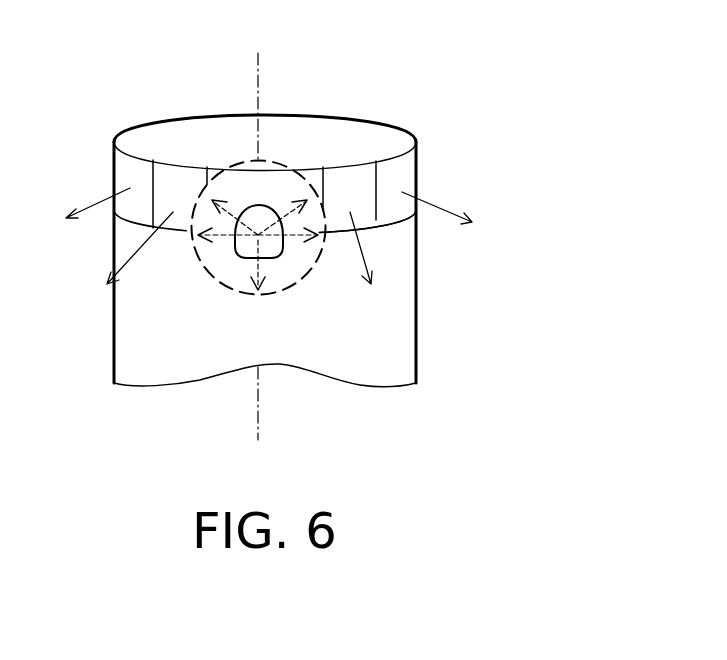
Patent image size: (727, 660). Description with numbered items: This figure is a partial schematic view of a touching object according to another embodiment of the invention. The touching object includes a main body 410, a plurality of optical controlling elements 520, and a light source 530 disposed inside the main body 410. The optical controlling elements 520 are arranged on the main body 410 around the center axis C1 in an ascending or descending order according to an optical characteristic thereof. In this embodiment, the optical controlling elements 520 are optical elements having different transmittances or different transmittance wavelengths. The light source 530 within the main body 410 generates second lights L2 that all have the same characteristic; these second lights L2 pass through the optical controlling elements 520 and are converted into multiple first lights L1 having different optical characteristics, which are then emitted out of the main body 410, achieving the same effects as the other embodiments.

The main body 410 is at (397, 356).
The optical controlling elements 520 is at (473, 110).
The light source 530 is at (262, 215).
The center axis C1 is at (259, 78).
The first lights L1 is at (445, 208).
The second lights L2 is at (238, 212).